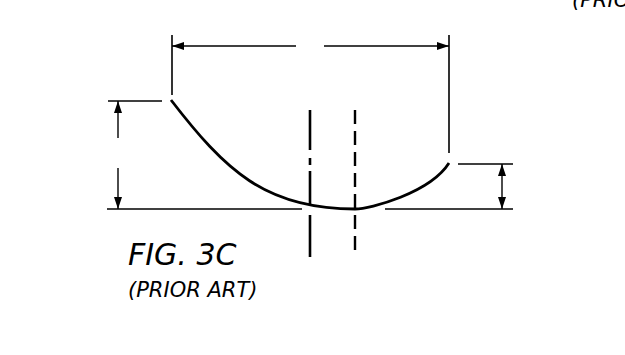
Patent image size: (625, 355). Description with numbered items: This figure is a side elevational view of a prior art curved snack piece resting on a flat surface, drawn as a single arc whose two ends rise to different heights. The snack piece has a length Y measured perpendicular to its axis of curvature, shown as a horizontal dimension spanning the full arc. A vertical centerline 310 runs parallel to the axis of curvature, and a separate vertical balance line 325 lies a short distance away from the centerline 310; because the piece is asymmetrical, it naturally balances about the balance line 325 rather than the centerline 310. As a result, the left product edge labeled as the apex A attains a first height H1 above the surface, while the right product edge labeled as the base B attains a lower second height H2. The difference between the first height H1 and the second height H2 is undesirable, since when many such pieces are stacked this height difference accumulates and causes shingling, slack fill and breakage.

The centerline 310 is at (308, 118).
The balance line 325 is at (357, 230).
The apex A is at (176, 98).
The base B is at (446, 161).
The length Y is at (310, 93).
The first height H1 is at (133, 155).
The second height H2 is at (505, 184).